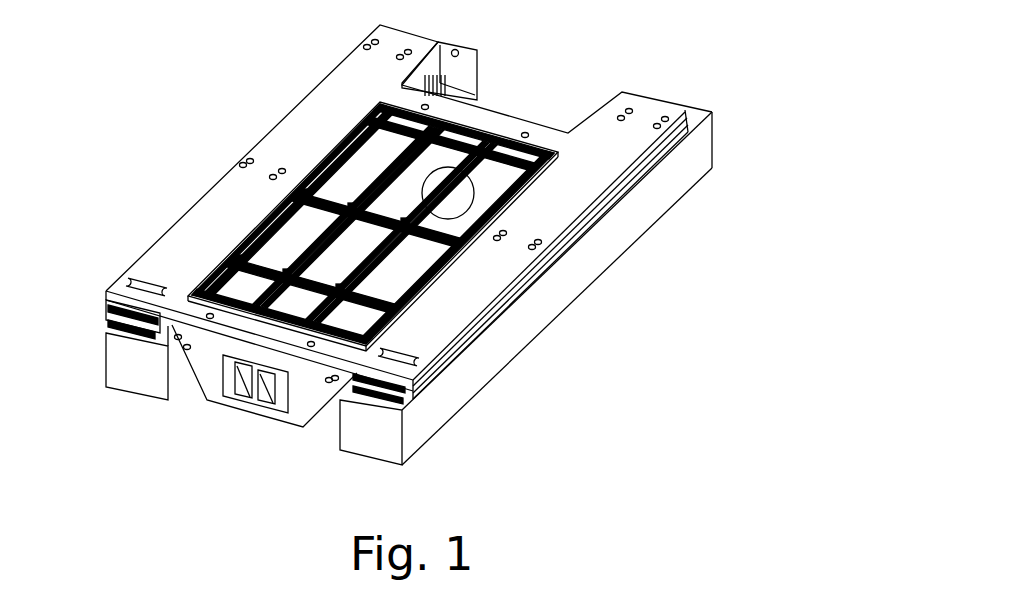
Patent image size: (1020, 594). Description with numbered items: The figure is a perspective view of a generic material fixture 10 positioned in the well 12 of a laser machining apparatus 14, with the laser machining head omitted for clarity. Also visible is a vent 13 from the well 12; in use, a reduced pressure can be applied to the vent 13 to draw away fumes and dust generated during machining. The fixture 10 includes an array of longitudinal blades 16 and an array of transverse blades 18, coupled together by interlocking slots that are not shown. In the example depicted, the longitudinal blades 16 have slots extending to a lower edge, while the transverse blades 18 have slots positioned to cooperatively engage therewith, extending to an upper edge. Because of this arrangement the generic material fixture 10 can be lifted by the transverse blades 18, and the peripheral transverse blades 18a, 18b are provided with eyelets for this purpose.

The generic material fixture 10 is at (397, 265).
The well 12 is at (295, 262).
The vent 13 is at (482, 168).
The laser machining apparatus 14 is at (170, 248).
The longitudinal blades 16 is at (420, 263).
The transverse blades 18 is at (437, 224).
The peripheral transverse blade 18a is at (338, 316).
The peripheral transverse blade 18b is at (532, 157).